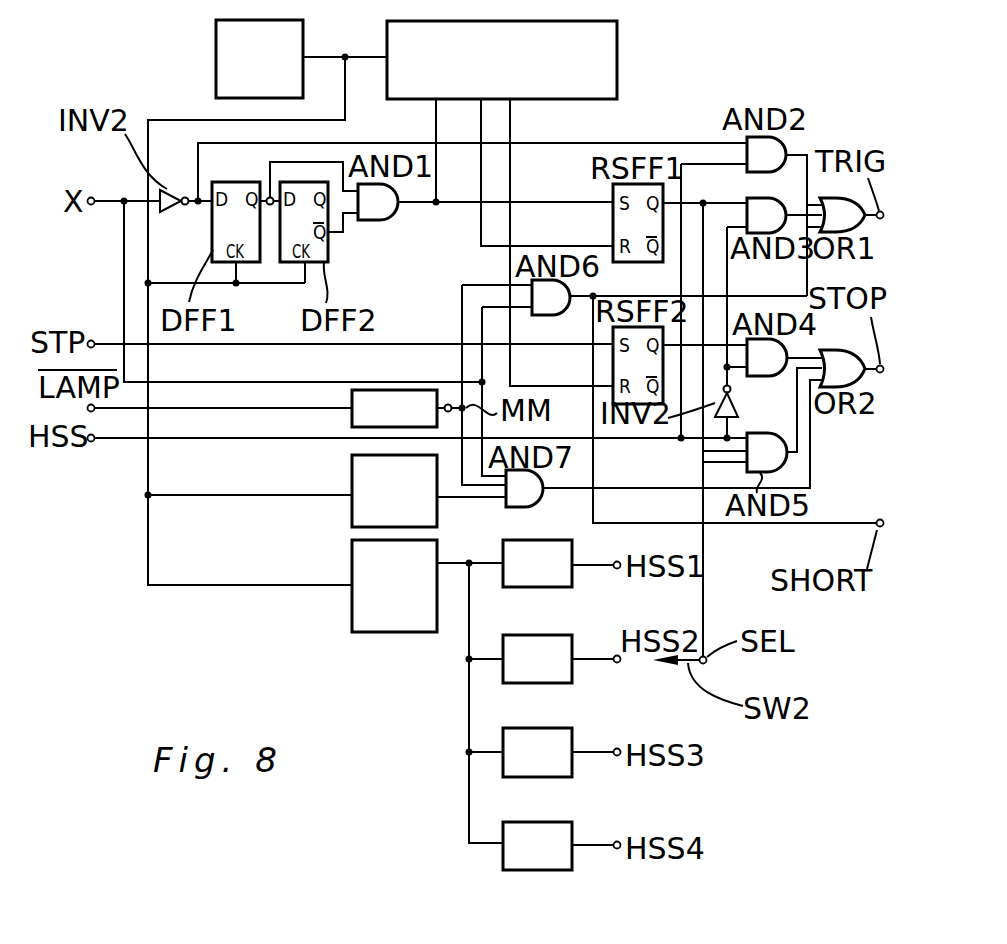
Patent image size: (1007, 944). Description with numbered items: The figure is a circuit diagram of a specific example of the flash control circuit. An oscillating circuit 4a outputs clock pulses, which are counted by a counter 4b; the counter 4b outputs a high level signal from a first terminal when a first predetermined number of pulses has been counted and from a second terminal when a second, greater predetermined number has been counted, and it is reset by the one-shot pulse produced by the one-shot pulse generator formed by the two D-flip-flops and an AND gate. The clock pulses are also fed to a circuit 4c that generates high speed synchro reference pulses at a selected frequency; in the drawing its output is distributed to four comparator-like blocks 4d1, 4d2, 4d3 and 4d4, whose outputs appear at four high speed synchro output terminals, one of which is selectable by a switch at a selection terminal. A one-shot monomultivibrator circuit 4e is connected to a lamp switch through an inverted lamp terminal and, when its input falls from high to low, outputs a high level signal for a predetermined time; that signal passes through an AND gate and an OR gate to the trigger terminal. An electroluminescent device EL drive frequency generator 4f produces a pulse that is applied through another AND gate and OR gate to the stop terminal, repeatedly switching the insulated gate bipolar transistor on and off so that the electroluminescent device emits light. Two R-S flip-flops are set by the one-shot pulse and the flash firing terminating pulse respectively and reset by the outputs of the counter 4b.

The oscillating circuit 4a is at (216, 40).
The counter 4b is at (618, 46).
The circuit for generating high speed synchro reference pulses 4c is at (377, 634).
The comparator CP 4d1 is at (516, 588).
The comparator CP 4d2 is at (517, 684).
The comparator CP 4d3 is at (517, 778).
The comparator CP 4d4 is at (503, 856).
The one-shot monomultivibrator circuit 4e is at (393, 390).
The electroluminescent device EL drive frequency generator 4f is at (351, 507).